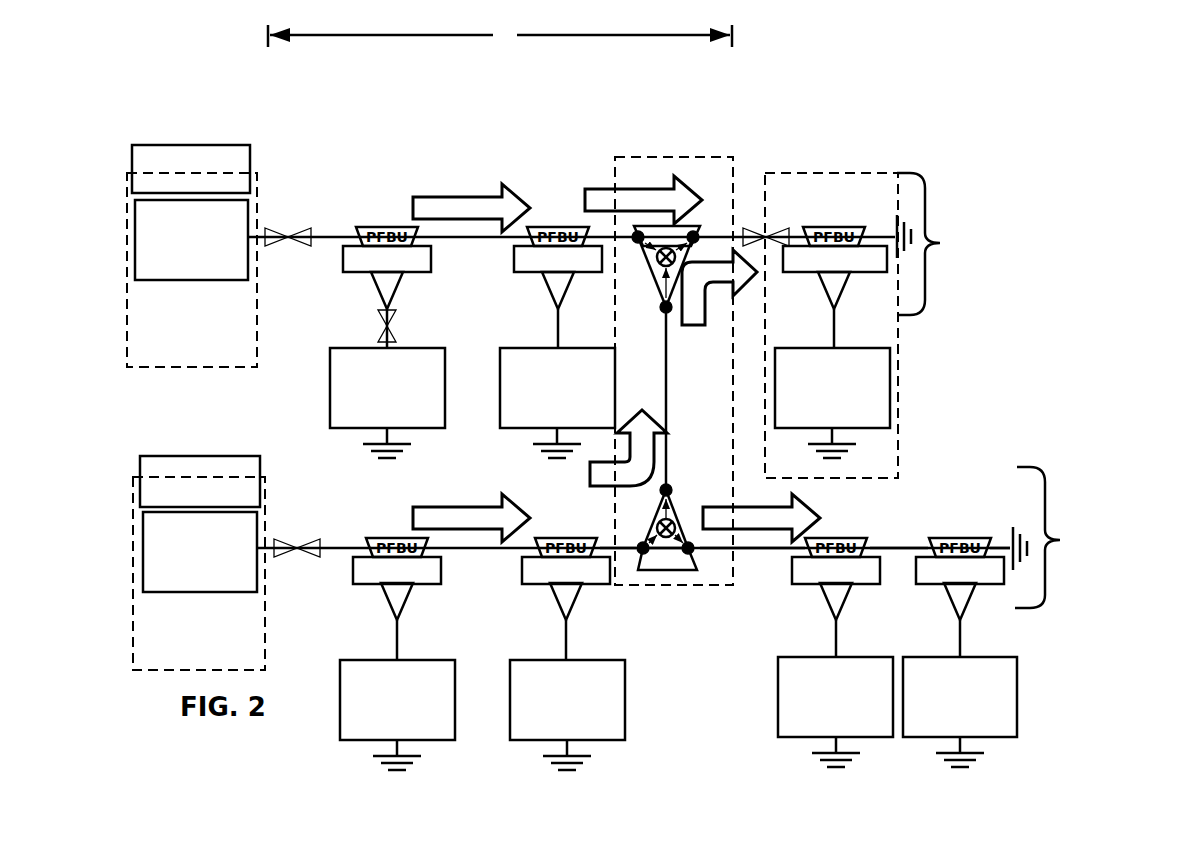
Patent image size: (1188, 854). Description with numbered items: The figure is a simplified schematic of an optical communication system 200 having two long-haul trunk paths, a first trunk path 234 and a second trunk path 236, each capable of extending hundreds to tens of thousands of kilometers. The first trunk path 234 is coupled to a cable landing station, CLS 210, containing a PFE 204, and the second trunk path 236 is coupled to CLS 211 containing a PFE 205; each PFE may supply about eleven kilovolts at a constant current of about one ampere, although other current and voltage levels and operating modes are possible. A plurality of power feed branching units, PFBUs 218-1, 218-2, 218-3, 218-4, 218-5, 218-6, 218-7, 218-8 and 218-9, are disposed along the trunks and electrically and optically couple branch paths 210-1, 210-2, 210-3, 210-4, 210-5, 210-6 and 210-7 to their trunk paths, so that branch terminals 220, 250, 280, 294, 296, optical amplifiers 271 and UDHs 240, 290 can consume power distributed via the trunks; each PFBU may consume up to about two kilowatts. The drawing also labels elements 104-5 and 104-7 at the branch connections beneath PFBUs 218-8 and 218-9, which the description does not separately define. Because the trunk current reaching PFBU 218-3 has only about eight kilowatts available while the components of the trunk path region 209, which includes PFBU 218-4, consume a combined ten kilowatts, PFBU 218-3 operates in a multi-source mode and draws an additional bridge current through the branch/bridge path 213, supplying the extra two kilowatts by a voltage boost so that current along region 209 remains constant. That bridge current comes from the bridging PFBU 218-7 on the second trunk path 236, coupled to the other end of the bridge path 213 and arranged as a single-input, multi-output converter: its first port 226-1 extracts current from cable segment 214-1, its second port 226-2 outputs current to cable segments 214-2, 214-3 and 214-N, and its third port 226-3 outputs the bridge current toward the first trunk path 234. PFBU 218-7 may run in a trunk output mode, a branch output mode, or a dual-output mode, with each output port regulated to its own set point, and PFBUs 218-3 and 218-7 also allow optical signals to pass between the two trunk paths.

The optical communication system 200 is at (274, 112).
The PFE 204 is at (191, 240).
The PFE 205 is at (200, 552).
The CLS 210 is at (192, 270).
The CLS 211 is at (199, 573).
The trunk path region 209 is at (797, 173).
The branch/bridge path 213 is at (658, 358).
The optical amplifier 271 is at (303, 233).
The PFBU 218-1 is at (388, 226).
The PFBU 218-2 is at (556, 226).
The PFBU 218-3 is at (648, 264).
The PFBU 218-4 is at (838, 296).
The PFBU 218-5 is at (396, 537).
The PFBU 218-6 is at (566, 537).
The bridging PFBU 218-7 is at (668, 573).
The PFBU 218-8 is at (852, 537).
The PFBU 218-9 is at (962, 537).
The branch path 210-1 is at (376, 312).
The branch path 210-2 is at (548, 322).
The branch path 210-3 is at (829, 330).
The branch path 210-4 is at (416, 639).
The branch path 210-5 is at (552, 640).
The branch path 210-6 is at (845, 650).
The branch path 210-7 is at (968, 650).
The branch terminal 220 is at (387, 403).
The UDH 240 is at (557, 403).
The branch terminal 250 is at (832, 403).
The branch terminal 280 is at (397, 715).
The UDH 290 is at (567, 715).
The branch terminal 294 is at (835, 712).
The branch terminal 296 is at (960, 712).
The first port 226-1 is at (636, 562).
The second port 226-2 is at (700, 555).
The third port 226-3 is at (684, 488).
The cable segment 214-1 is at (615, 545).
The cable segment 214-2 is at (765, 551).
The cable segment 214-3 is at (893, 551).
The cable segment 214-N is at (1003, 545).
The branch cable 104-5 is at (832, 596).
The branch cable 104-7 is at (954, 596).
The first trunk path 234 is at (955, 244).
The second trunk path 236 is at (1073, 537).